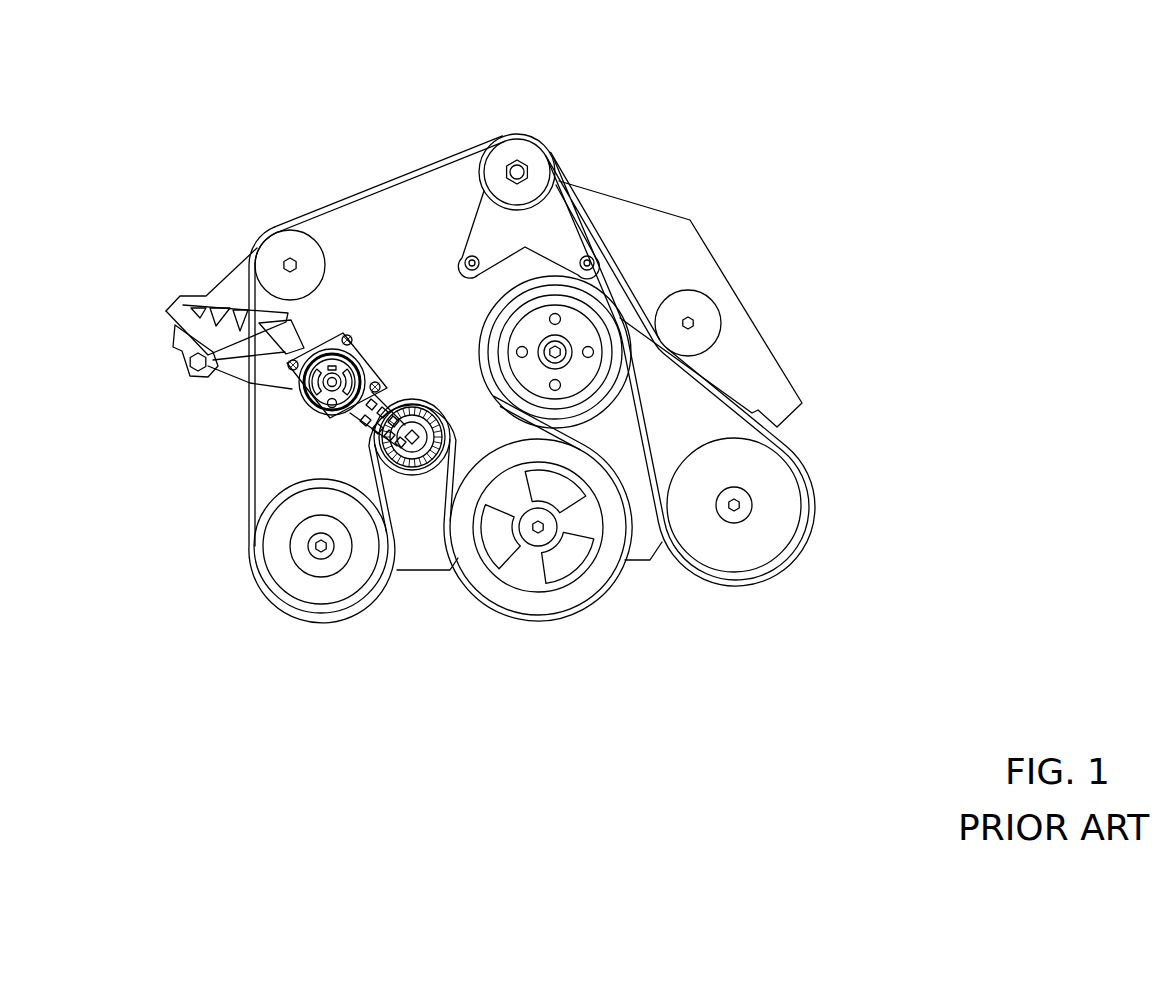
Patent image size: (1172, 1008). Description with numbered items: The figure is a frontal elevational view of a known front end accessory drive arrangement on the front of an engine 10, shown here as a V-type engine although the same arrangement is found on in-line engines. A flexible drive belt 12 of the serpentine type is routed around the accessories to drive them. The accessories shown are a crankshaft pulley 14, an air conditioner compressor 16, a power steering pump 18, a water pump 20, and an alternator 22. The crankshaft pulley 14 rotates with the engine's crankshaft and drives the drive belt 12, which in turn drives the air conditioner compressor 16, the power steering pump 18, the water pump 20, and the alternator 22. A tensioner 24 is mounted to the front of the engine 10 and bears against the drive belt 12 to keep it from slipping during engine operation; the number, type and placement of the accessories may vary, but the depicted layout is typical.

The engine 10 is at (654, 62).
The flexible drive belt 12 is at (361, 187).
The crankshaft pulley 14 is at (535, 607).
The air conditioner compressor 16 is at (306, 587).
The power steering pump 18 is at (762, 543).
The water pump 20 is at (582, 330).
The alternator 22 is at (520, 147).
The tensioner 24 is at (356, 403).